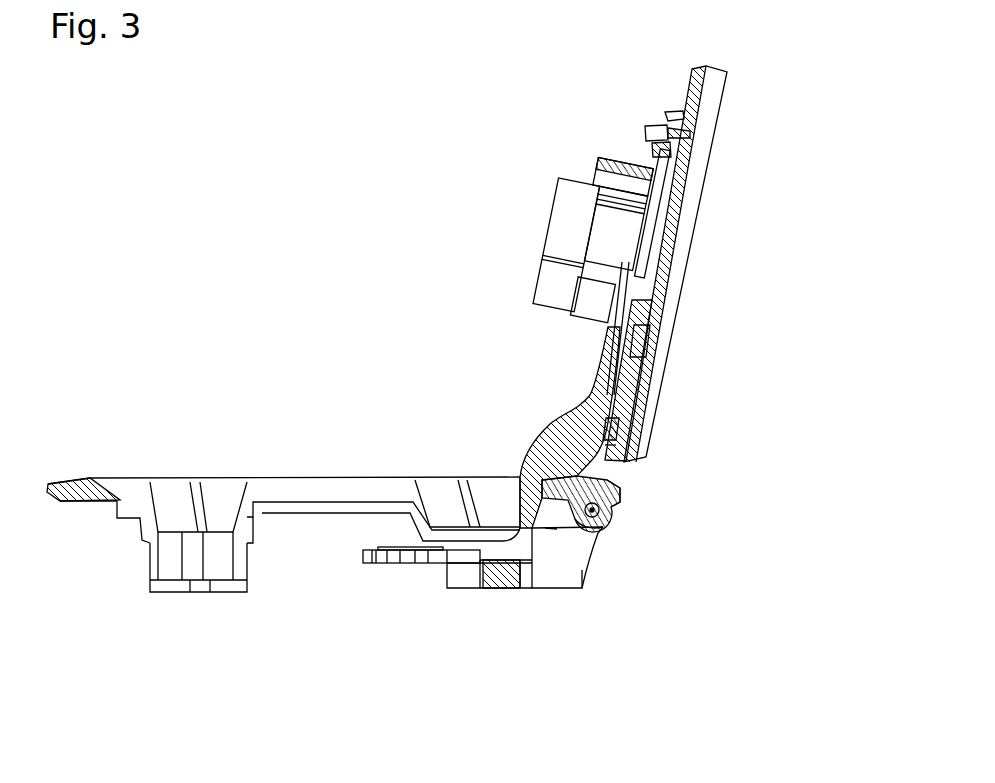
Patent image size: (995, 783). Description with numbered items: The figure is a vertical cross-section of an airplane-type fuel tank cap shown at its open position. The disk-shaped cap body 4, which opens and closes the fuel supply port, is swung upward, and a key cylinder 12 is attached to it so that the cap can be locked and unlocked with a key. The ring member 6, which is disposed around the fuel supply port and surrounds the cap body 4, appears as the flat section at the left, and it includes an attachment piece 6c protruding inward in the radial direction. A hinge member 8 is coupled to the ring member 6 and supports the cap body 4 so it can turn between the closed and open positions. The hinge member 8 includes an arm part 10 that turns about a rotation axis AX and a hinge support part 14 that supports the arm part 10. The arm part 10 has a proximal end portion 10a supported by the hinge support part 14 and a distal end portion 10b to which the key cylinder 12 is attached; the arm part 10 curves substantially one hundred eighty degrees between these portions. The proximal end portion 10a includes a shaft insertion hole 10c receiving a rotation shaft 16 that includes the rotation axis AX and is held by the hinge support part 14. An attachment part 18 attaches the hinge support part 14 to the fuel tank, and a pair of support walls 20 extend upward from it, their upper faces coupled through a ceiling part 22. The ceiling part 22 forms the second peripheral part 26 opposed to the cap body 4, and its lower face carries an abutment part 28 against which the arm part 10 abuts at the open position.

The cap body 4 is at (714, 168).
The ring member 6 is at (67, 477).
The attachment piece 6c is at (170, 592).
The hinge member 8 is at (531, 448).
The arm part 10 is at (527, 458).
The proximal end portion 10a is at (610, 516).
The distal end portion 10b is at (585, 412).
The shaft insertion hole 10c is at (594, 528).
The key cylinder 12 is at (573, 178).
The hinge support part 14 is at (547, 622).
The rotation shaft 16 is at (573, 481).
The attachment part 18 is at (457, 556).
The support wall 20 is at (568, 560).
The ceiling part 22 is at (618, 492).
The second peripheral part 26 is at (620, 460).
The abutment part 28 is at (557, 529).
The rotation axis AX is at (596, 512).